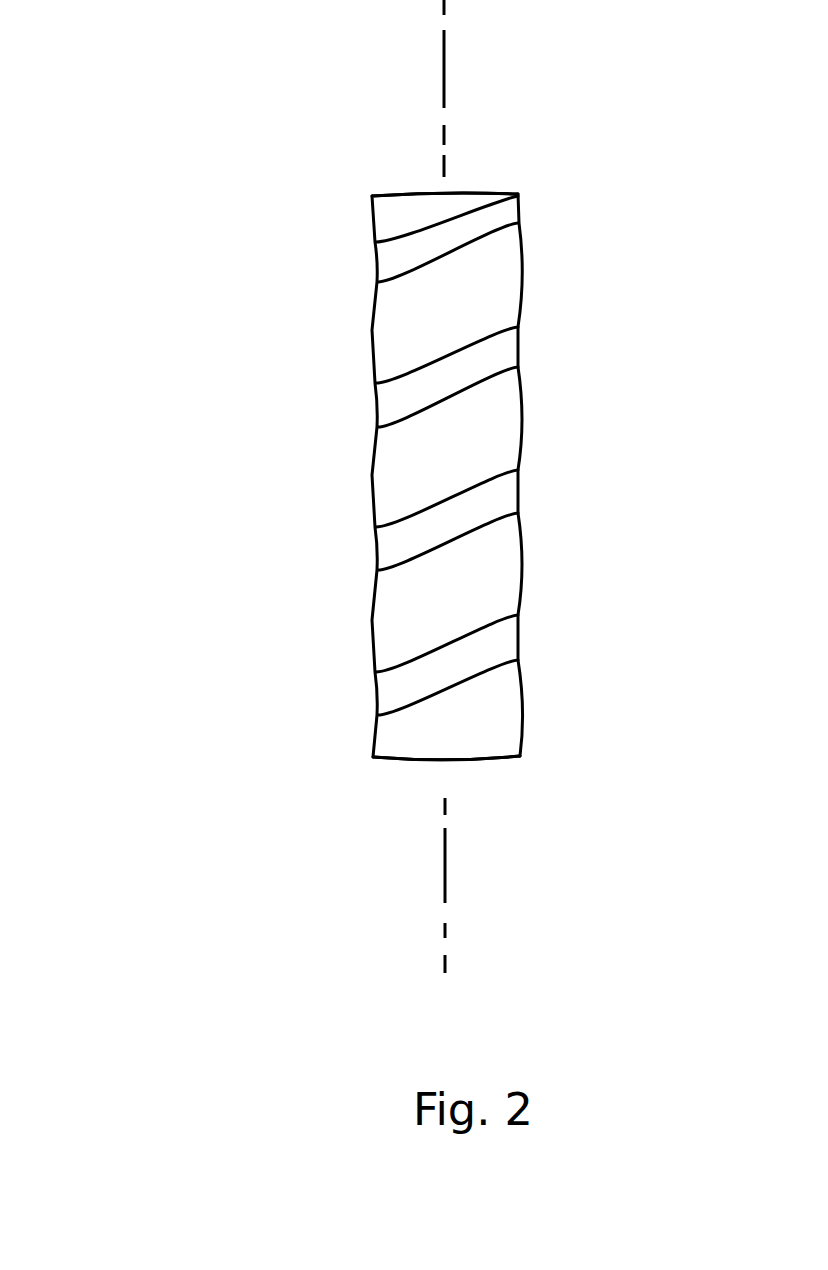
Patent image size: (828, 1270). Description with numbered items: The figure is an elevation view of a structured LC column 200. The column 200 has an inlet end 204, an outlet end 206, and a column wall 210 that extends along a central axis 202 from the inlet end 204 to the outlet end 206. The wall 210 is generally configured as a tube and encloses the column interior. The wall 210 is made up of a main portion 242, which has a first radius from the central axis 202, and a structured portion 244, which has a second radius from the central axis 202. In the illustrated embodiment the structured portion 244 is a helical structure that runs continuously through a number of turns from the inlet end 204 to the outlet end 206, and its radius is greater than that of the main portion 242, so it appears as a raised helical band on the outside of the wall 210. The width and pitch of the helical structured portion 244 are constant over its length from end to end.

The structured LC column 200 is at (372, 458).
The central axis 202 is at (442, 97).
The inlet end 204 is at (488, 168).
The outlet end 206 is at (475, 776).
The column wall 210 is at (431, 476).
The main portion 242 is at (377, 410).
The structured portion 244 is at (375, 487).